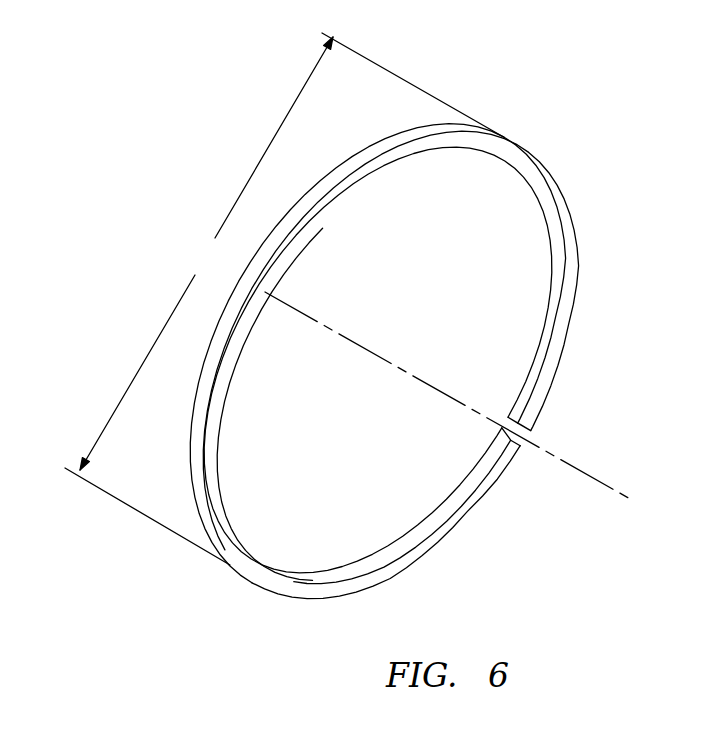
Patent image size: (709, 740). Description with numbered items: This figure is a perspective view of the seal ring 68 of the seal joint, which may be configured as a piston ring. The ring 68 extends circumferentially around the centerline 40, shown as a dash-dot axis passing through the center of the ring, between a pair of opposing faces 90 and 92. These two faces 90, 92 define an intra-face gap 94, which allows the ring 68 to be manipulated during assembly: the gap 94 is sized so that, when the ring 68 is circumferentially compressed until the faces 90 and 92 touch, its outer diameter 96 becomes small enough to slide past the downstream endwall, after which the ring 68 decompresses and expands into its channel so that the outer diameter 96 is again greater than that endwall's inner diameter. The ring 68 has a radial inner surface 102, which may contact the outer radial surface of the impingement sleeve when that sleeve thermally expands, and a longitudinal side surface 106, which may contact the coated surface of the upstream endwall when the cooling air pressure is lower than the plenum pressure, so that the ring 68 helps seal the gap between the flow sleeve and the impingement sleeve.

The ring 68 is at (435, 357).
The radial inner surface 102 is at (548, 340).
The longitudinal side surface 106 is at (526, 378).
The face 92 is at (538, 412).
The intra-face gap 94 is at (532, 427).
The face 90 is at (522, 444).
The centerline 40 is at (578, 470).
The outer diameter 96 is at (284, 299).